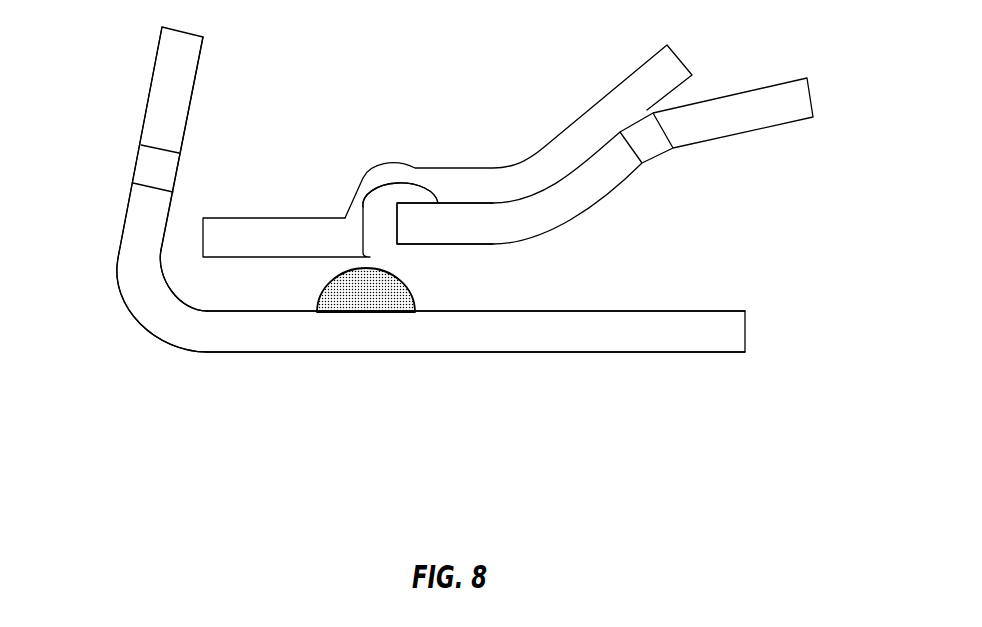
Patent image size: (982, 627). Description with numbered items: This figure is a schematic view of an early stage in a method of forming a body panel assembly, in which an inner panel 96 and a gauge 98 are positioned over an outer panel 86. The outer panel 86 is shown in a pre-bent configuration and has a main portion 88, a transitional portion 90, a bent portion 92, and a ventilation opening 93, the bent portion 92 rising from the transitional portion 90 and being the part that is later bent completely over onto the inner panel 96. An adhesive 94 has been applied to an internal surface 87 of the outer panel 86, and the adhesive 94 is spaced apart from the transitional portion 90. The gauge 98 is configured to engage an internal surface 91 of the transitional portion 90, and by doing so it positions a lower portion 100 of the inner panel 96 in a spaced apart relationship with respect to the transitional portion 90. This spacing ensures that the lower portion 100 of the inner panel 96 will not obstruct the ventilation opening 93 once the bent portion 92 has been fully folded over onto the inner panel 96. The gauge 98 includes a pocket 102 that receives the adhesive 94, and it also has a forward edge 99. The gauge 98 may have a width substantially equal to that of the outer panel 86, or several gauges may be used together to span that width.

The outer panel 86 is at (758, 331).
The internal surface 87 is at (580, 311).
The main portion 88 is at (745, 363).
The transitional portion 90 is at (93, 267).
The internal surface 91 is at (173, 290).
The bent portion 92 is at (133, 23).
The ventilation opening 93 is at (162, 165).
The adhesive 94 is at (317, 296).
The inner panel 96 is at (813, 98).
The gauge 98 is at (833, 27).
The forward edge 99 is at (203, 240).
The lower portion 100 is at (540, 245).
The pocket 102 is at (390, 217).